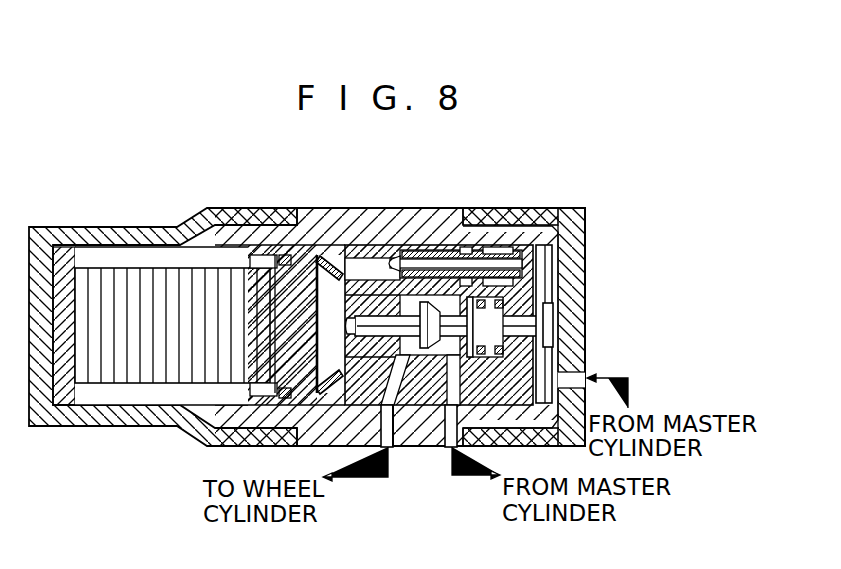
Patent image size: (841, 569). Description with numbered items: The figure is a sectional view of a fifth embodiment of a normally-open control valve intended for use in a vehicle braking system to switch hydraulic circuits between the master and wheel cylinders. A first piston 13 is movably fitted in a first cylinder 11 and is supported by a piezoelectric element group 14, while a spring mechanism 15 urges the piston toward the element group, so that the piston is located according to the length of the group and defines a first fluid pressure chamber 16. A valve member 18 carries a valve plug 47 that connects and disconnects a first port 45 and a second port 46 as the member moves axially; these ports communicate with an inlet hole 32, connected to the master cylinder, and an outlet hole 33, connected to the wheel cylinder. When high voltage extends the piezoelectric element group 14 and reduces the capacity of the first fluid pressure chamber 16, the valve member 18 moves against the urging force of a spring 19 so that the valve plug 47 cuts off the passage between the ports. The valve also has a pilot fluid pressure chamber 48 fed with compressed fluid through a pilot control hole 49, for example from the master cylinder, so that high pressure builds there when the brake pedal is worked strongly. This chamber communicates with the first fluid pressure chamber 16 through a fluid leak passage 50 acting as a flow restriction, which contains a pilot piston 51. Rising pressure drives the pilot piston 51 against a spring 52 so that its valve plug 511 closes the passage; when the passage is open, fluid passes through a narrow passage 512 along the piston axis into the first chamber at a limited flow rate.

The first cylinder 11 is at (340, 255).
The first piston 13 is at (270, 260).
The piezoelectric element group 14 is at (121, 372).
The spring mechanism 15 is at (318, 262).
The first fluid pressure chamber 16 is at (262, 390).
The valve member 18 is at (427, 447).
The spring 19 is at (556, 297).
The inlet hole 32 is at (439, 447).
The outlet hole 33 is at (393, 447).
The first port 45 is at (458, 447).
The second port 46 is at (362, 420).
The valve plug 47 is at (425, 258).
The pilot fluid pressure chamber 48 is at (552, 357).
The pilot control hole 49 is at (577, 377).
The fluid leak passage 50 is at (363, 263).
The pilot piston 51 is at (478, 252).
The valve plug 511 is at (395, 258).
The narrow passage 512 is at (452, 252).
The spring 52 is at (505, 248).